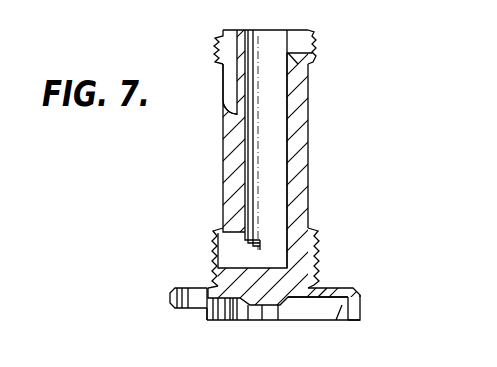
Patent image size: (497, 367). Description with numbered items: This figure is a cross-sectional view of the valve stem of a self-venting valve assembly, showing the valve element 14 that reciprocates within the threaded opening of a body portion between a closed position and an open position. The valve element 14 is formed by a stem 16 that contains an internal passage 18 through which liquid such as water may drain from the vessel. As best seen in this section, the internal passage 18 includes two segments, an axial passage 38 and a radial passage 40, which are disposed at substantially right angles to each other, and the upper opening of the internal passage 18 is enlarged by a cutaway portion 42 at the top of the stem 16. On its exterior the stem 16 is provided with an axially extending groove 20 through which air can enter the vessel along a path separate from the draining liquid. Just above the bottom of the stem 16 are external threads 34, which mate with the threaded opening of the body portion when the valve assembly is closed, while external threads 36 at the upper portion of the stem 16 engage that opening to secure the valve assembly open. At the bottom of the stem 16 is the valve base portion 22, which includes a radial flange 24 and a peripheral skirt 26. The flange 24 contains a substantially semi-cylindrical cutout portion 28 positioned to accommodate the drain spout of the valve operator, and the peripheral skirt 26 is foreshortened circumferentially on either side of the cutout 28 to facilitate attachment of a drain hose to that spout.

The valve element 14 is at (314, 91).
The stem 16 is at (310, 152).
The internal passage 18 is at (258, 142).
The axially extending groove 20 is at (230, 90).
The valve base portion 22 is at (342, 306).
The radial flange 24 is at (334, 289).
The peripheral skirt 26 is at (355, 308).
The semi-cylindrical cutout portion 28 is at (171, 290).
The external threads 34 is at (316, 244).
The external threads 36 is at (213, 48).
The axial passage 38 is at (278, 187).
The radial passage 40 is at (213, 250).
The cutaway portion 42 is at (292, 36).